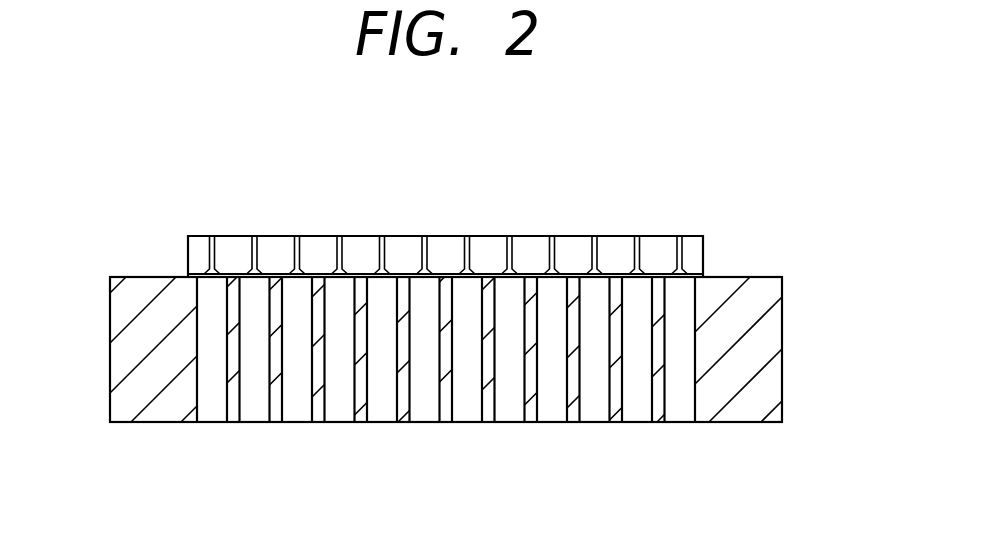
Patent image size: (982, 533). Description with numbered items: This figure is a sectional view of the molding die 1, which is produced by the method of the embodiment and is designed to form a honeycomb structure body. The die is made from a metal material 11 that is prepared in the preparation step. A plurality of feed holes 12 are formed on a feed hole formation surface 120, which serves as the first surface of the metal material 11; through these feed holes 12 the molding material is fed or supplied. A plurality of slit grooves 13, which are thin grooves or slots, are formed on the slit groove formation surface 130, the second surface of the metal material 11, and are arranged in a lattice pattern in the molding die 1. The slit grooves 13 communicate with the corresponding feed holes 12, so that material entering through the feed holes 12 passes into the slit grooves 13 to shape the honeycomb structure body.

The molding die 1 is at (700, 218).
The metal material 11 is at (740, 413).
The feed holes 12 is at (423, 415).
The feed hole formation surface 120 is at (323, 423).
The slit grooves 13 is at (197, 257).
The slit groove formation surface 130 is at (535, 237).